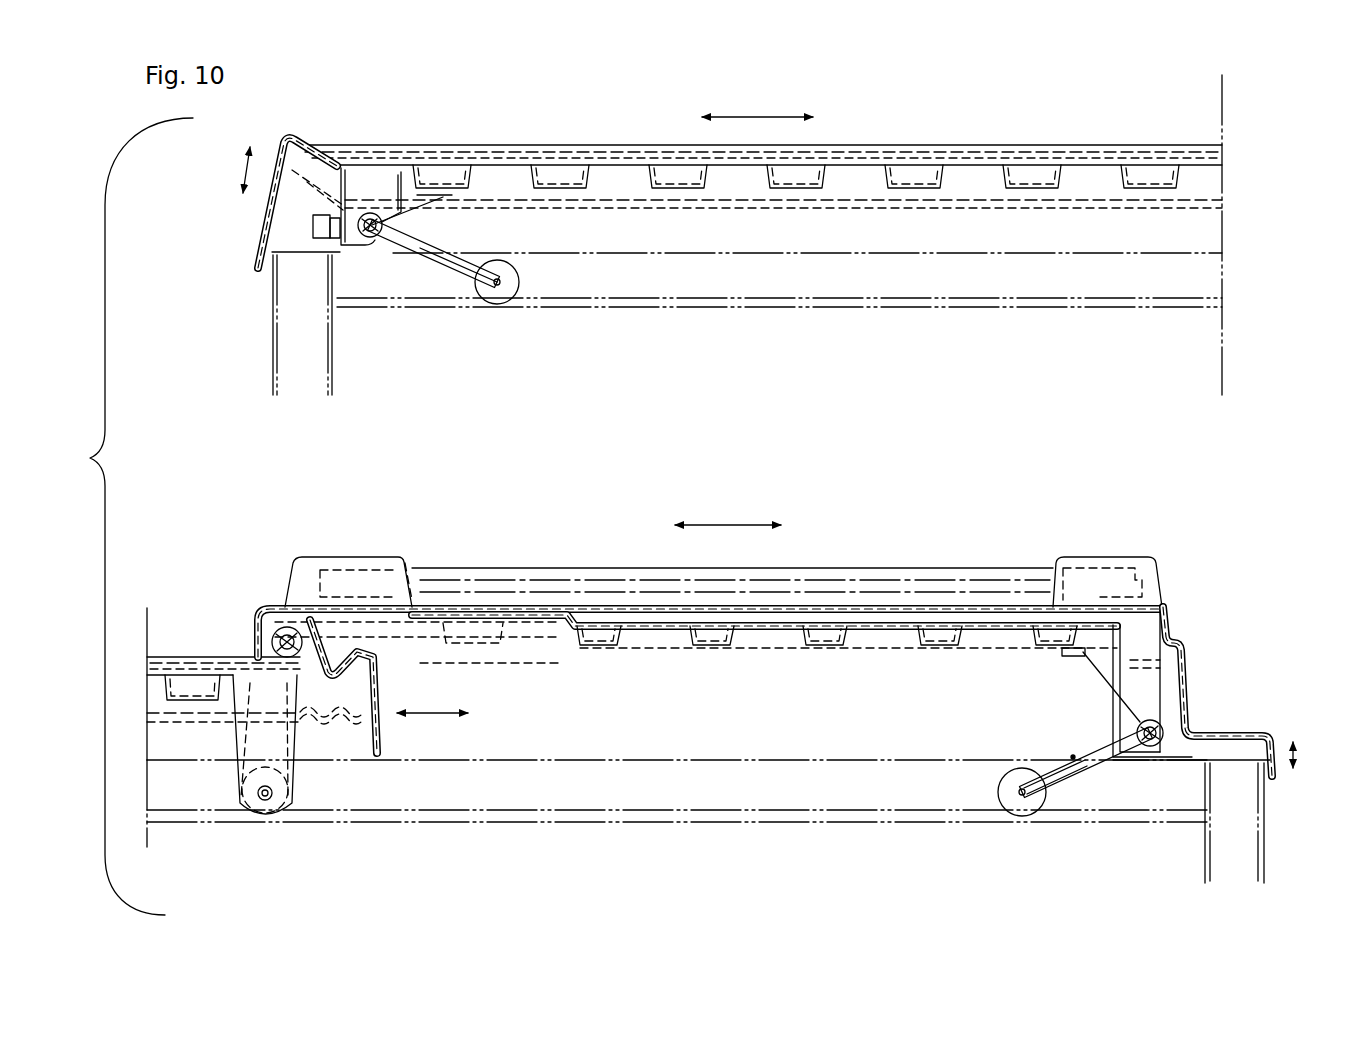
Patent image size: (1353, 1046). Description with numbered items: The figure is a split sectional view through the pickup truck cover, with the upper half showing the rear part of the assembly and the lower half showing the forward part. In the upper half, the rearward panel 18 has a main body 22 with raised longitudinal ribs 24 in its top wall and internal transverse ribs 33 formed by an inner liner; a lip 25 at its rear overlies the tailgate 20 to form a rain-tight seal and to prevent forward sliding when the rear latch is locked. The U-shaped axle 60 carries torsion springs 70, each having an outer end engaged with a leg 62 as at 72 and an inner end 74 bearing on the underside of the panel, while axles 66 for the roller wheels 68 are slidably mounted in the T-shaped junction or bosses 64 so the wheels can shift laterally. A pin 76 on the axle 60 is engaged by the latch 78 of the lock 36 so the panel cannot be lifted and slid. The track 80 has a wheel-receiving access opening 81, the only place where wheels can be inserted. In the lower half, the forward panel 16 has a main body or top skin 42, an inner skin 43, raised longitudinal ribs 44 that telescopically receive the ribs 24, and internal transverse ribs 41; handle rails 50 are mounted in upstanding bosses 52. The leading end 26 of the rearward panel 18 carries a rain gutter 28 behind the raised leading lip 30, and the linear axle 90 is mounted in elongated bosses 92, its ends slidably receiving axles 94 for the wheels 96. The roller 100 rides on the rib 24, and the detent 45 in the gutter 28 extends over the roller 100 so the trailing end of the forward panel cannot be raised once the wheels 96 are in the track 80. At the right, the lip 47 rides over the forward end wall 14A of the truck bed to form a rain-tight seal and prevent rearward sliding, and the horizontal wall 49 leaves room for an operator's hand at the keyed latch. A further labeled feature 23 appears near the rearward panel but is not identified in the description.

The forward end wall 14A is at (1262, 855).
The forward panel 16 is at (990, 612).
The rearward panel 18 is at (875, 160).
The tailgate 20 is at (268, 368).
The main body 22 is at (622, 165).
The slot 23 is at (628, 192).
The raised ribs 24 is at (478, 145).
The lip 25 is at (256, 266).
The leading end 26 is at (362, 658).
The rain gutter 28 is at (338, 668).
The raised leading lip 30 is at (300, 612).
The internal transverse ribs 33 is at (905, 193).
The lock 36 is at (312, 225).
The internal transverse ribs 41 is at (602, 648).
The main body 42 is at (805, 607).
The inner skin 43 is at (880, 640).
The raised longitudinal ribs 44 is at (605, 612).
The detent 45 is at (265, 612).
The lip 47 is at (1277, 773).
The horizontal wall 49 is at (1220, 736).
The handle rails 50 is at (440, 568).
The bosses 52 is at (352, 557).
The U-shaped axle 60 is at (372, 213).
The legs 62 is at (1060, 772).
The T-shaped junction 64 is at (521, 278).
The axles 66 is at (500, 287).
The roller wheels 68 is at (470, 288).
The torsion springs 70 is at (384, 223).
The outer end engagement 72 is at (438, 262).
The inner end 74 is at (446, 197).
The pin 76 is at (345, 215).
The latch 78 is at (338, 243).
The track 80 is at (840, 298).
The wheel-receiving access opening 81 is at (363, 250).
The axle 90 is at (272, 793).
The elongated bosses 92 is at (284, 770).
The axles 94 is at (266, 800).
The wheels 96 is at (240, 793).
The roller 100 is at (271, 632).